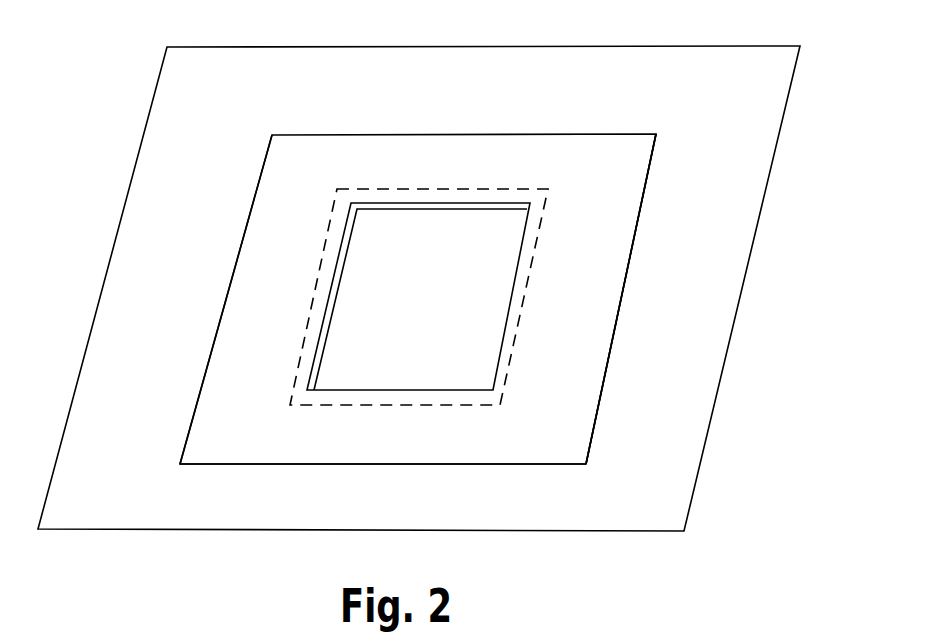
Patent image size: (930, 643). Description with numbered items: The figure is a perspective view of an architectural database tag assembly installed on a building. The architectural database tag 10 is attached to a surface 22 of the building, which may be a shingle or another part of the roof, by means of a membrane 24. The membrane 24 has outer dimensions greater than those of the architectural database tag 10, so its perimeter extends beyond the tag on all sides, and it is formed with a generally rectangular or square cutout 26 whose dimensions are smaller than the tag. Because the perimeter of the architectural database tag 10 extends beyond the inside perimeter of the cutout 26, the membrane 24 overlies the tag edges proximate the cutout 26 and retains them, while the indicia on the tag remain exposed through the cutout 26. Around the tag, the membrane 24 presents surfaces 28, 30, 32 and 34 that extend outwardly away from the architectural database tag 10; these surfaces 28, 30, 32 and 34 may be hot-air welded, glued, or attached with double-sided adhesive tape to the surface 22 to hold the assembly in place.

The architectural database tag 10 is at (419, 297).
The surface 22 is at (722, 308).
The membrane 24 is at (650, 161).
The cutout 26 is at (468, 217).
The surface 28 is at (412, 147).
The surface 30 is at (265, 215).
The surface 32 is at (378, 452).
The surface 34 is at (580, 375).